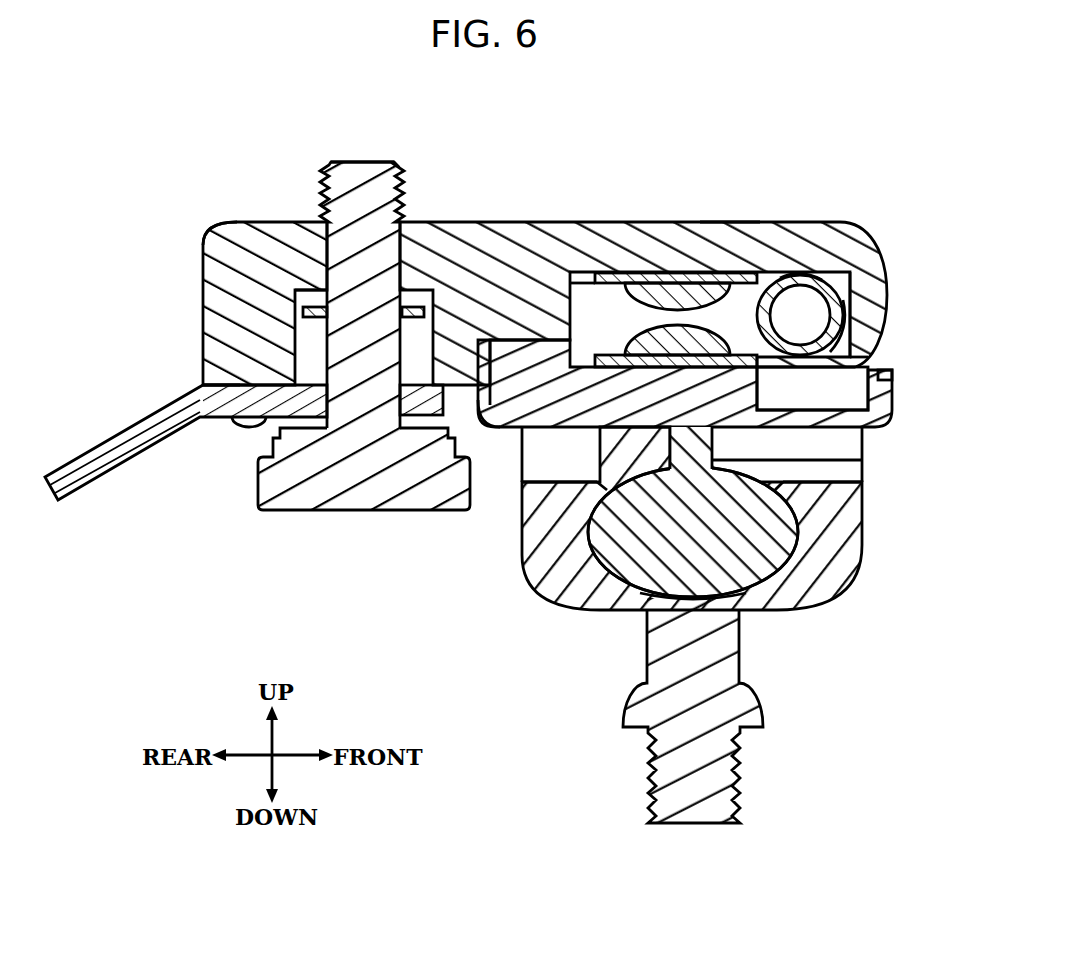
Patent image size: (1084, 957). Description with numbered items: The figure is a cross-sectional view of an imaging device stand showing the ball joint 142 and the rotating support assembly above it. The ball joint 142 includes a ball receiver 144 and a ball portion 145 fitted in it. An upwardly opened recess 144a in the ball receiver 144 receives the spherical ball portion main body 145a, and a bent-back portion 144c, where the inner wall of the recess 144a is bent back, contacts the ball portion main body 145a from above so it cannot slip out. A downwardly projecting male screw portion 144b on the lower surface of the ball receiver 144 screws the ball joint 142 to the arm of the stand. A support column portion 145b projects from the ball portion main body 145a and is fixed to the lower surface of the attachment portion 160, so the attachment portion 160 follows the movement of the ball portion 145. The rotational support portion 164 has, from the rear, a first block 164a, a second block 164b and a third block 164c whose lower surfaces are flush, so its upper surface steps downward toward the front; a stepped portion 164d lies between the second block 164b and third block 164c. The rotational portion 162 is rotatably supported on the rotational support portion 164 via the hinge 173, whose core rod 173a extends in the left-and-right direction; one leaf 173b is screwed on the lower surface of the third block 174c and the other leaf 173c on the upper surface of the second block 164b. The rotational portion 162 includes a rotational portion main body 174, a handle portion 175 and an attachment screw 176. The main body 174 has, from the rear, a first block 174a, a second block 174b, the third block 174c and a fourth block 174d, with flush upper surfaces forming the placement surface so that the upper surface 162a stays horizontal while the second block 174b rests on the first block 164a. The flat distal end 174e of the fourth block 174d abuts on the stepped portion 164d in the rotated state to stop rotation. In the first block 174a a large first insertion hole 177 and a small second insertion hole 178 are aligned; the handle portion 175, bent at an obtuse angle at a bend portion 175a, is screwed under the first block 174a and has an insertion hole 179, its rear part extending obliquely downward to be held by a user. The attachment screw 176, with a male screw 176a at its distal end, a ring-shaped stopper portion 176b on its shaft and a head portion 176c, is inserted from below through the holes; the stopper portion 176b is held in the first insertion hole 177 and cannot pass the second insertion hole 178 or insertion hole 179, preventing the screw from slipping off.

The ball joint 142 is at (807, 603).
The ball receiver 144 is at (562, 596).
The recess 144a is at (603, 618).
The male screw portion 144b is at (650, 645).
The bent-back portion 144c is at (800, 495).
The ball portion 145 is at (528, 572).
The ball portion main body 145a is at (800, 530).
The support column portion 145b is at (770, 456).
The attachment portion 160 is at (198, 270).
The rotational portion 162 is at (788, 220).
The upper surface of the rotational portion 162a is at (722, 237).
The rotational support portion 164 is at (882, 415).
The first block 164a is at (480, 495).
The second block 164b is at (525, 538).
The third block 164c is at (880, 385).
The stepped portion 164d is at (866, 352).
The hinge 173 is at (842, 288).
The core rod 173a is at (860, 305).
The one leaf 173b is at (610, 282).
The other leaf 173c is at (831, 270).
The rotational portion main body 174 is at (662, 258).
The first block 174a is at (250, 265).
The second block 174b is at (515, 270).
The third block 174c is at (677, 250).
The fourth block 174d is at (872, 320).
The distal end 174e is at (862, 366).
The handle portion 175 is at (125, 435).
The bend portion 175a is at (205, 386).
The attachment screw 176 is at (335, 512).
The male screw 176a is at (398, 200).
The stopper portion 176b is at (420, 305).
The head portion 176c is at (262, 505).
The first insertion hole 177 is at (300, 345).
The second insertion hole 178 is at (322, 222).
The insertion hole 179 is at (250, 428).